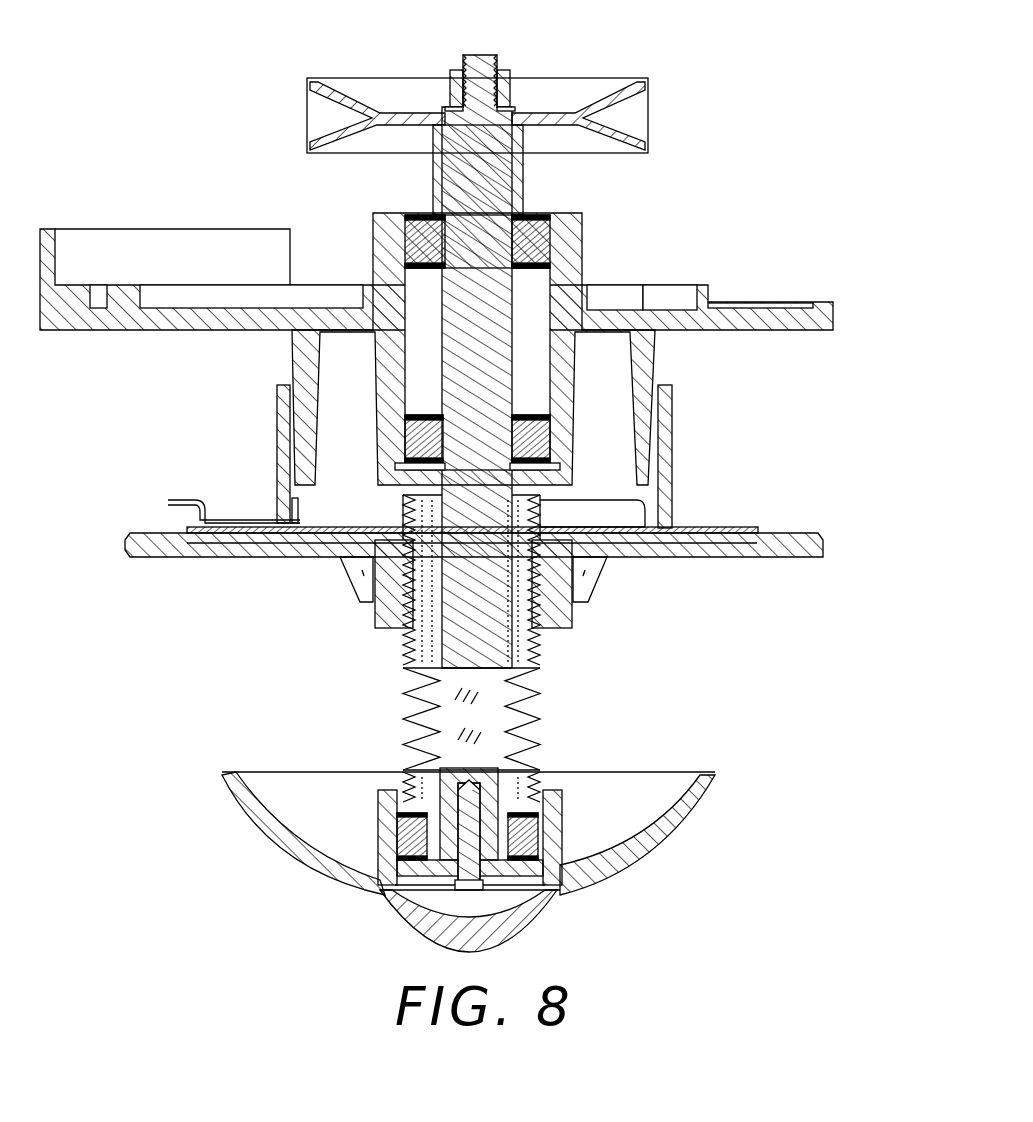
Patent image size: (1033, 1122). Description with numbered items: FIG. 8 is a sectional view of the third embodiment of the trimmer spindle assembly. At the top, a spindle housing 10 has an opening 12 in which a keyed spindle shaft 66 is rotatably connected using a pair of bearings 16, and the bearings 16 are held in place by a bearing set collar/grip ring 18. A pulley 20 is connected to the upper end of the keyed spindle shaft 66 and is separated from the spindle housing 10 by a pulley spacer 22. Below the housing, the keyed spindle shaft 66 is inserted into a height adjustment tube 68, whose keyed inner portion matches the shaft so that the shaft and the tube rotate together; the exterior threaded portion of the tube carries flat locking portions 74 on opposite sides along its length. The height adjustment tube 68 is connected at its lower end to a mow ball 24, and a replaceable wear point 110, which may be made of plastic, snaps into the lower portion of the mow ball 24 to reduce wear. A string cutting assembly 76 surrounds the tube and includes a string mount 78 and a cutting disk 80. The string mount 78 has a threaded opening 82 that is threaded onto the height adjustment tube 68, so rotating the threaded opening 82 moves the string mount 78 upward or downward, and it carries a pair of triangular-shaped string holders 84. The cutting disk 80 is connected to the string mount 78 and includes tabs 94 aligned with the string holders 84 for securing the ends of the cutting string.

The spindle housing 10 is at (832, 302).
The opening 12 is at (545, 212).
The bearings 16 is at (410, 218).
The bearing set collar/grip ring 18 is at (408, 468).
The pulley 20 is at (646, 80).
The pulley spacer 22 is at (524, 176).
The mow ball 24 is at (712, 795).
The keyed spindle shaft 66 is at (540, 642).
The height adjustment tube 68 is at (540, 686).
The flat locking portions 74 is at (400, 706).
The string cutting assembly 76 is at (518, 496).
The string mount 78 is at (672, 445).
The cutting disk 80 is at (815, 534).
The threaded opening 82 is at (405, 628).
The triangular-shaped string holders 84 is at (370, 578).
The tabs 94 is at (348, 565).
The replaceable wear point 110 is at (555, 932).